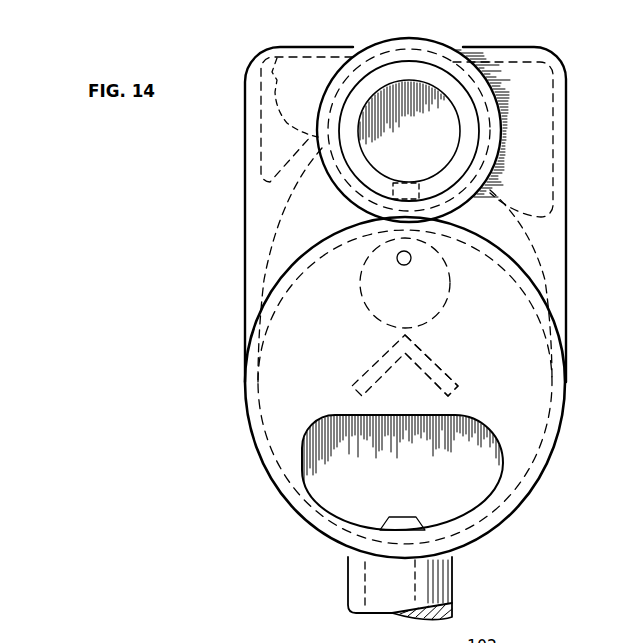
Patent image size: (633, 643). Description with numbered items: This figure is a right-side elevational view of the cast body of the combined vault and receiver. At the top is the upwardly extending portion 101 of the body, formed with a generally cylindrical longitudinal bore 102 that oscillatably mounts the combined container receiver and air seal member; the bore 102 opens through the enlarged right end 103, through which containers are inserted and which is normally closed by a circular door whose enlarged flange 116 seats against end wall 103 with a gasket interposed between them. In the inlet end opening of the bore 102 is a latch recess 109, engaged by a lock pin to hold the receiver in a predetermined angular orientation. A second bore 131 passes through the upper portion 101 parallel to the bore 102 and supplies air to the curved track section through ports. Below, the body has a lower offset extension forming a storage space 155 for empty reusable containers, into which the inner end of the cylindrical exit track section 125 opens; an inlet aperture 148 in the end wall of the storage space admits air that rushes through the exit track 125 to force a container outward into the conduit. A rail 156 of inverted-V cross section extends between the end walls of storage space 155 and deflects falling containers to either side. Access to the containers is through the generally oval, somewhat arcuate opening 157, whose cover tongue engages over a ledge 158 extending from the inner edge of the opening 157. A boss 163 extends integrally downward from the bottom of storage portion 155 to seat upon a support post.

The upwardly extending portion 101 is at (567, 120).
The longitudinal bore 102 is at (456, 111).
The enlarged right end 103 is at (490, 98).
The latch recess 109 is at (405, 183).
The enlarged flange 116 is at (429, 59).
The exit track section 125 is at (447, 300).
The bore 131 is at (258, 92).
The inlet aperture 148 is at (401, 265).
The storage space 155 is at (266, 379).
The rail 156 is at (451, 382).
The opening 157 is at (496, 450).
The ledge 158 is at (405, 517).
The boss 163 is at (372, 582).